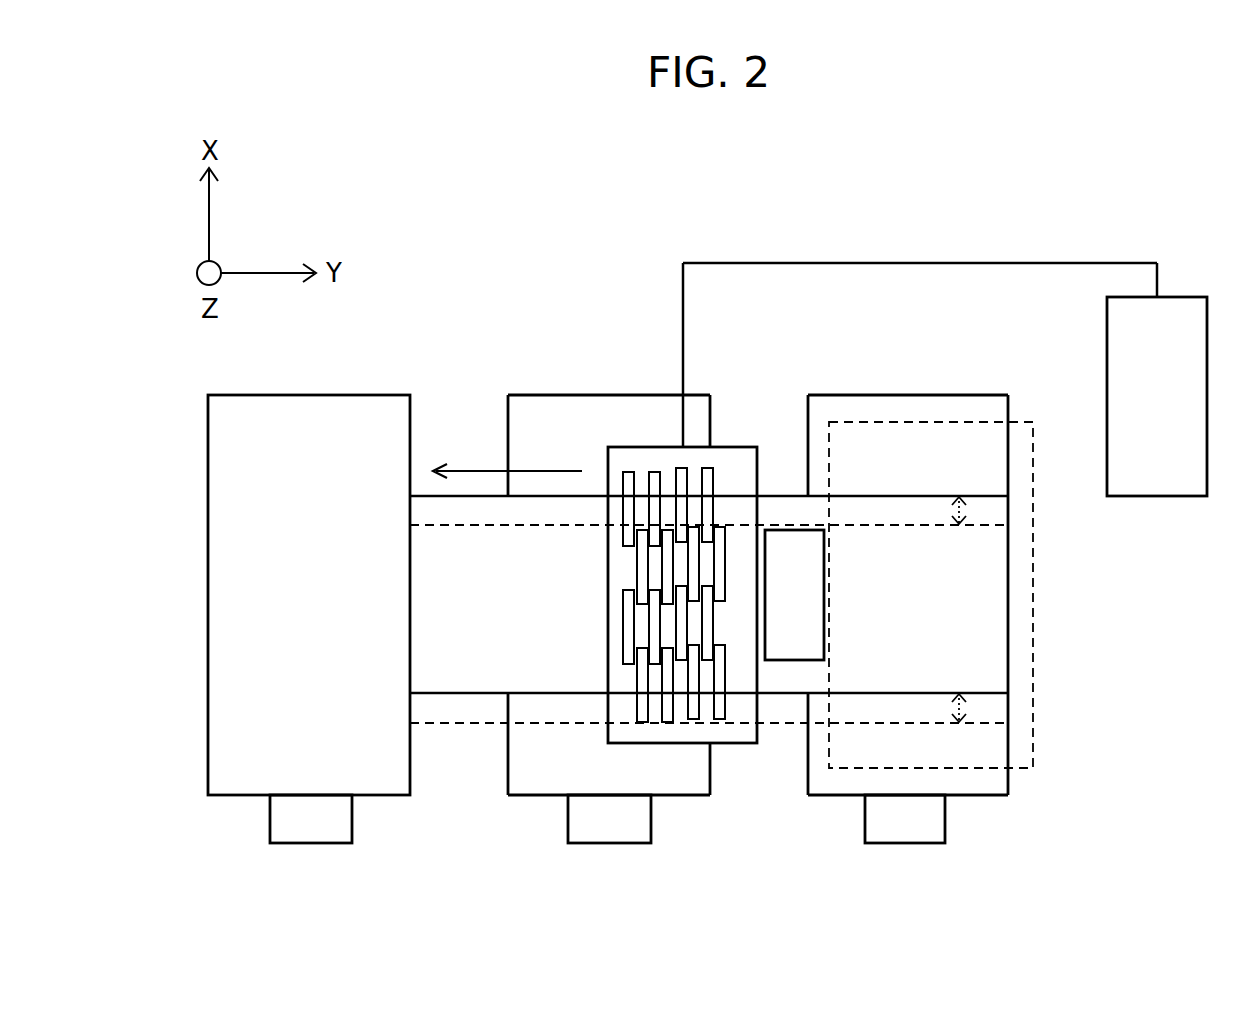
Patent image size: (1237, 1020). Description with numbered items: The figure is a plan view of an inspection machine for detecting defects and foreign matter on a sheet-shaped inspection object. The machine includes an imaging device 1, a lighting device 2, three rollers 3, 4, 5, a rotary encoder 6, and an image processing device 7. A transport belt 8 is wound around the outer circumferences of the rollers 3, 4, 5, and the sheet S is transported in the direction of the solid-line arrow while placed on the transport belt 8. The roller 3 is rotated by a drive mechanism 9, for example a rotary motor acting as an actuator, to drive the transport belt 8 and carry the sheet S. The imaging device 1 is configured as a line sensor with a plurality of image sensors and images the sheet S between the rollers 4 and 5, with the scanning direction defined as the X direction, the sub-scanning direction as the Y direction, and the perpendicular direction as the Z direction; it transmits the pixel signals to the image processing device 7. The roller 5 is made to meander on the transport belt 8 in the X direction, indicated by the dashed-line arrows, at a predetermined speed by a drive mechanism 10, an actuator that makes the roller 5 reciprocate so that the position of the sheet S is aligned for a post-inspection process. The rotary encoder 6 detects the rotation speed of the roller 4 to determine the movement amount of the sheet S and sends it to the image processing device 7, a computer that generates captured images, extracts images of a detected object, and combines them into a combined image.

The imaging device 1 is at (733, 447).
The lighting device 2 is at (1023, 417).
The roller 3 is at (375, 395).
The roller 4 is at (596, 395).
The roller 5 is at (940, 395).
The rotary encoder 6 is at (651, 813).
The image processing device 7 is at (1172, 297).
The transport belt 8 is at (424, 695).
The drive mechanism 9 is at (352, 818).
The drive mechanism 10 is at (945, 827).
The sheet S is at (800, 660).